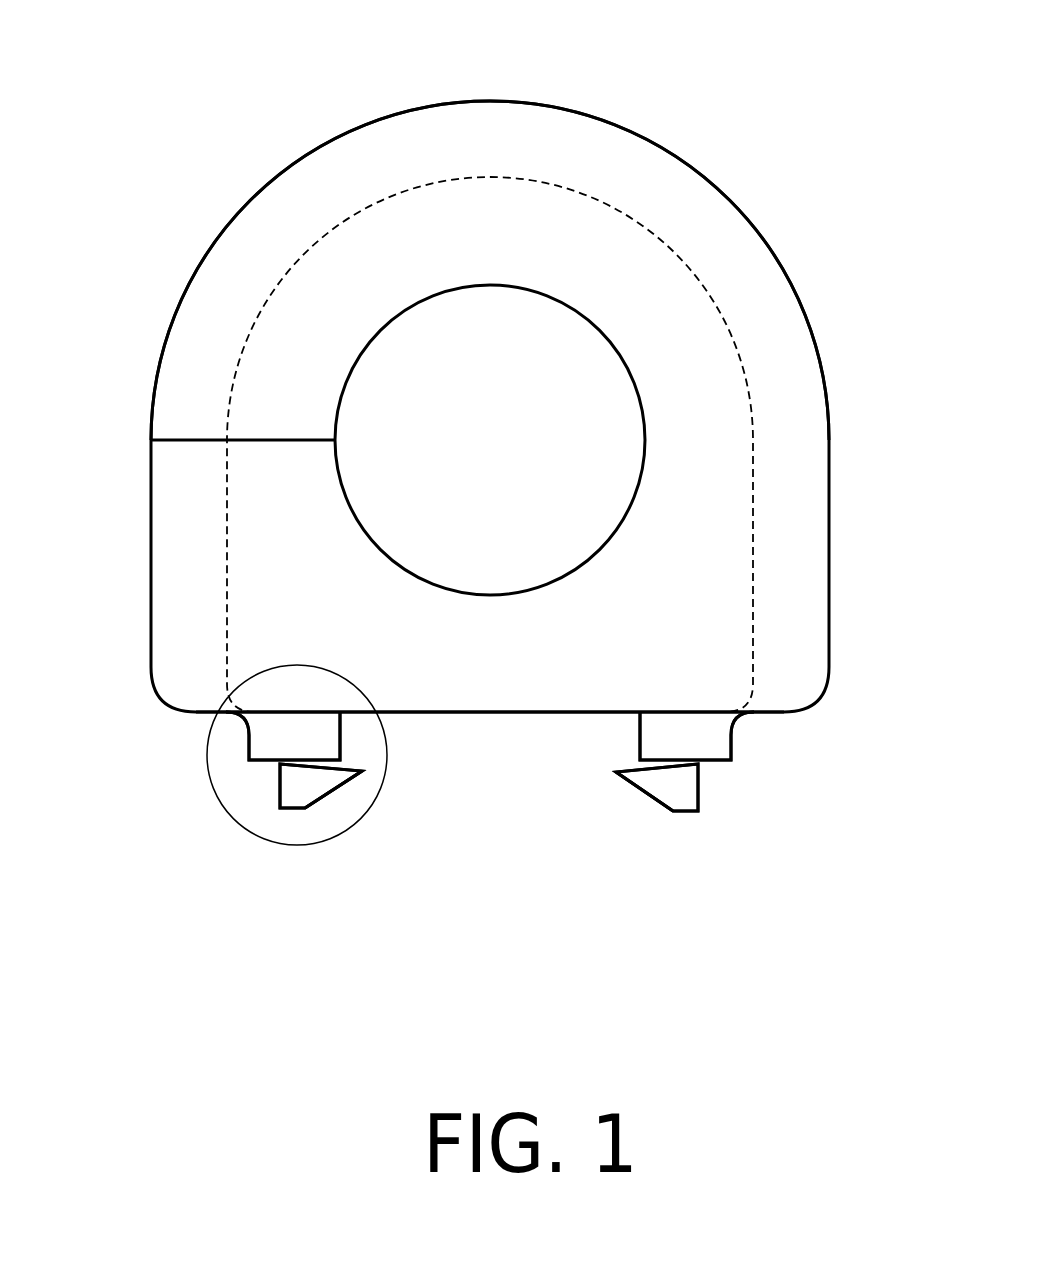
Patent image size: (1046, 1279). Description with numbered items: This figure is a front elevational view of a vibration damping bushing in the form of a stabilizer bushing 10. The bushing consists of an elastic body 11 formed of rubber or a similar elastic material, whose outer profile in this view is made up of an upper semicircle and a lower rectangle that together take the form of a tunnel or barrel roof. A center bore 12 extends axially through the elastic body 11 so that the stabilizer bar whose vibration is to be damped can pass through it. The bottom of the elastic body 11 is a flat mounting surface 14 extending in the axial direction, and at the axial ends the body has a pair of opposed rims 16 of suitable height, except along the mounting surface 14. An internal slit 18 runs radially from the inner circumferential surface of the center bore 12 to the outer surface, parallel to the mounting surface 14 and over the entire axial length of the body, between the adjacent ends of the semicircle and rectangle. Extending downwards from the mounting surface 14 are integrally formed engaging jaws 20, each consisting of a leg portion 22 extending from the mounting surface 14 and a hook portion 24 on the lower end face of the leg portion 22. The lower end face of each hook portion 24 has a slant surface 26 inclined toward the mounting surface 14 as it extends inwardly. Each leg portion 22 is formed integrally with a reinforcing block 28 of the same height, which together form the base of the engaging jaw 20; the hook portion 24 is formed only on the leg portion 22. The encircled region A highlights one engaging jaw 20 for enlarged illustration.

The stabilizer bushing 10 is at (676, 126).
The elastic body 11 is at (362, 243).
The center bore 12 is at (641, 392).
The flat mounting surface 14 is at (484, 713).
The opposed rims 16 is at (773, 310).
The internal slit 18 is at (198, 440).
The engaging jaw 20 is at (296, 813).
The leg portion 22 is at (322, 732).
The hook portion 24 is at (288, 787).
The slant surface 26 is at (332, 793).
The reinforcing block 28 is at (262, 739).
The detail region A is at (242, 853).